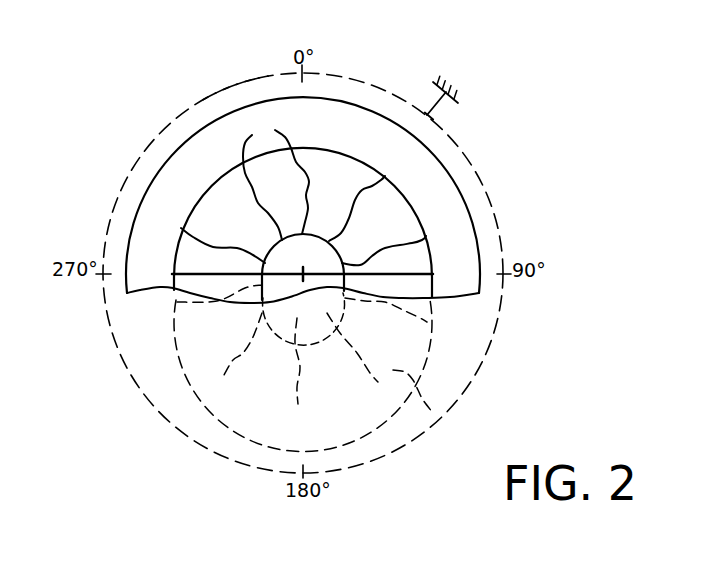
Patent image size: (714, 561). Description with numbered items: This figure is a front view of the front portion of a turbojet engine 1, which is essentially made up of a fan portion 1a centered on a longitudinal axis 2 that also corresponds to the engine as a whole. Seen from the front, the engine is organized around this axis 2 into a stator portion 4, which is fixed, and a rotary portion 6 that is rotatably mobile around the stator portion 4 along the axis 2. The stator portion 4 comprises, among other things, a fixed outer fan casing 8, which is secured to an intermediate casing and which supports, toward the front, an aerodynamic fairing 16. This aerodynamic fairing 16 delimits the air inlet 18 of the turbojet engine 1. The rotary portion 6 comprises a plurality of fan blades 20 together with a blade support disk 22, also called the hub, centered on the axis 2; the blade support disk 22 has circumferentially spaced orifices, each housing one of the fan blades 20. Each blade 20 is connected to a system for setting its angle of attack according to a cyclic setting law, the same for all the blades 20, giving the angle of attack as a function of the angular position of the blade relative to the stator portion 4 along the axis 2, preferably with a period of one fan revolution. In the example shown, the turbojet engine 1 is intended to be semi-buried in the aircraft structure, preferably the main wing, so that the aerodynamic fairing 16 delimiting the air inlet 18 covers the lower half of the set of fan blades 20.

The turbojet engine 1 is at (177, 112).
The fan portion 1a is at (243, 77).
The longitudinal axis 2 is at (304, 265).
The stator portion 4 is at (433, 82).
The rotary portion 6 is at (292, 227).
The fixed outer fan casing 8 is at (437, 414).
The aerodynamic fairing 16 is at (150, 200).
The air inlet 18 is at (230, 223).
The fan blades 20 is at (435, 193).
The blade support disk 22 is at (313, 230).